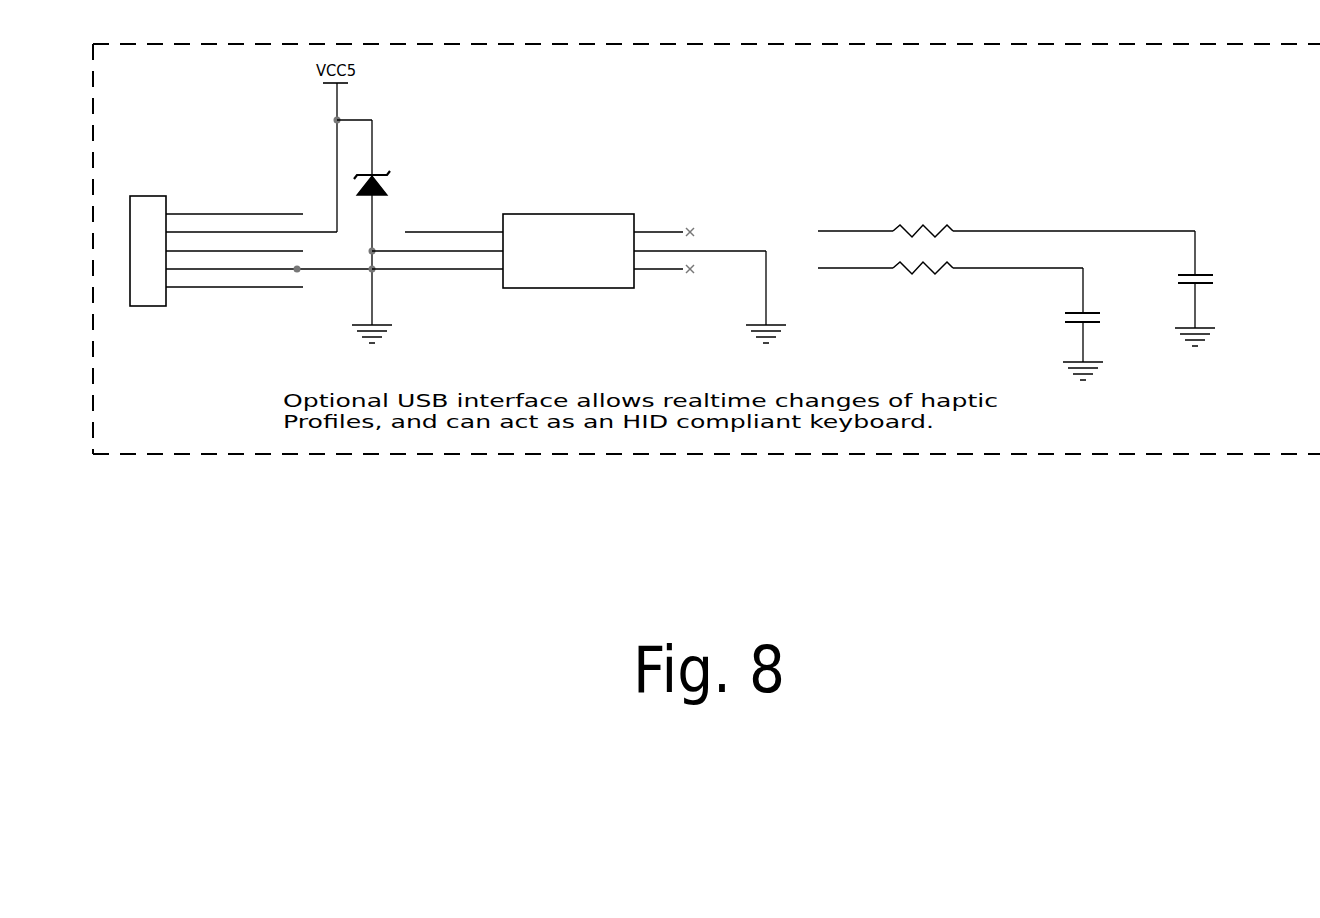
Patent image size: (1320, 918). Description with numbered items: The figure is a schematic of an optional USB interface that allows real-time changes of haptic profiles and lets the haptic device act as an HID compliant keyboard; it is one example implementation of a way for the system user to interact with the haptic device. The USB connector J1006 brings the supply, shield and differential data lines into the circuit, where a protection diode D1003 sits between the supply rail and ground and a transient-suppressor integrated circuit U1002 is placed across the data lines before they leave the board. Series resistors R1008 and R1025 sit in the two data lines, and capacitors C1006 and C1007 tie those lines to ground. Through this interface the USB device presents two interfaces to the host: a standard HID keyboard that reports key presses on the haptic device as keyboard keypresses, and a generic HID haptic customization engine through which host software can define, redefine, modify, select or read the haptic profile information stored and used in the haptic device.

The USB connector CON5 SIP/TM/L.500/5 J1006 is at (251, 258).
The zener diode CPDU5VD D_0603_12 D1003 is at (418, 231).
The SN65220 USB port transient suppressor TSOP6 U1002 is at (595, 265).
The 22 ohm resistor SM/C_0805 on DP1 R1008 is at (1006, 196).
The 22 ohm resistor SM/C_0805 on DM1 R1025 is at (950, 277).
The 22pF capacitor SM/C_0805 on DM1 C1006 is at (1125, 324).
The 22pF capacitor SM/C_0805 on DP1 C1007 is at (1241, 288).